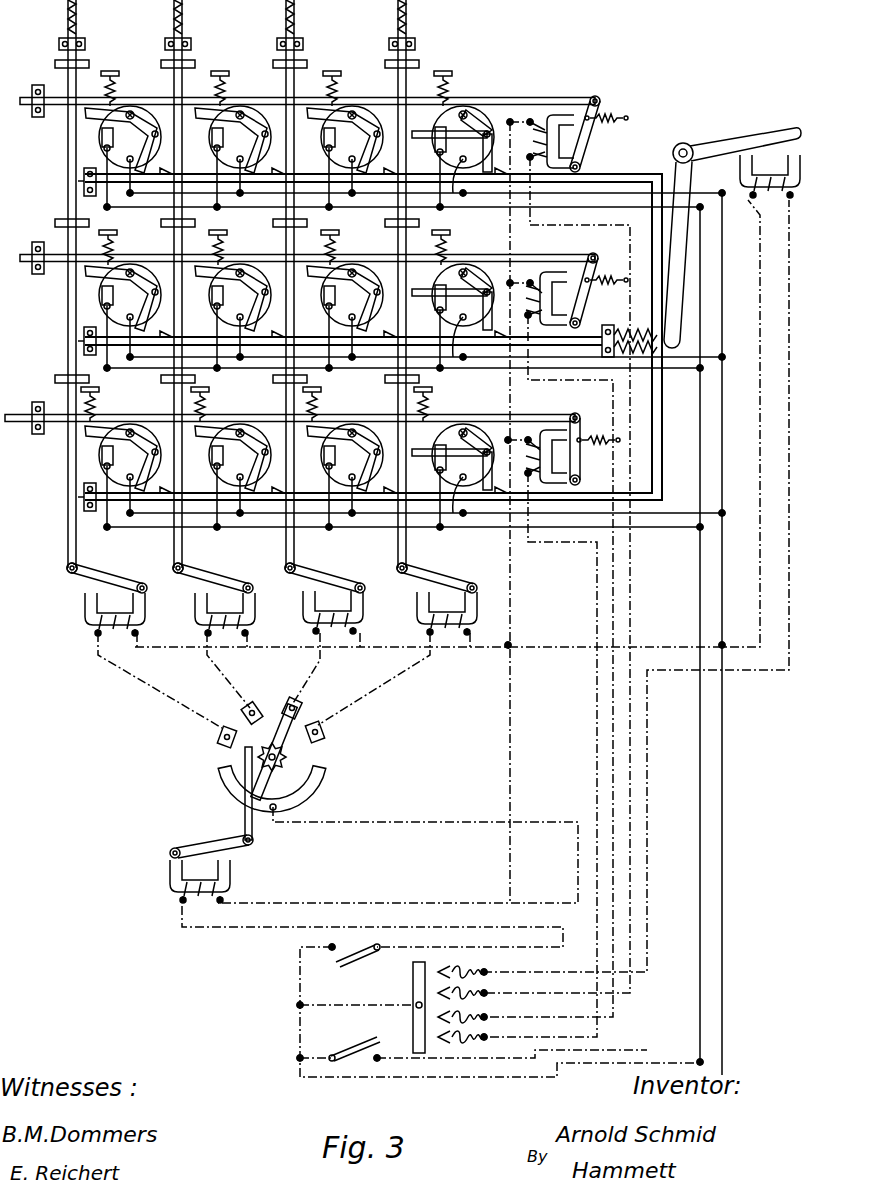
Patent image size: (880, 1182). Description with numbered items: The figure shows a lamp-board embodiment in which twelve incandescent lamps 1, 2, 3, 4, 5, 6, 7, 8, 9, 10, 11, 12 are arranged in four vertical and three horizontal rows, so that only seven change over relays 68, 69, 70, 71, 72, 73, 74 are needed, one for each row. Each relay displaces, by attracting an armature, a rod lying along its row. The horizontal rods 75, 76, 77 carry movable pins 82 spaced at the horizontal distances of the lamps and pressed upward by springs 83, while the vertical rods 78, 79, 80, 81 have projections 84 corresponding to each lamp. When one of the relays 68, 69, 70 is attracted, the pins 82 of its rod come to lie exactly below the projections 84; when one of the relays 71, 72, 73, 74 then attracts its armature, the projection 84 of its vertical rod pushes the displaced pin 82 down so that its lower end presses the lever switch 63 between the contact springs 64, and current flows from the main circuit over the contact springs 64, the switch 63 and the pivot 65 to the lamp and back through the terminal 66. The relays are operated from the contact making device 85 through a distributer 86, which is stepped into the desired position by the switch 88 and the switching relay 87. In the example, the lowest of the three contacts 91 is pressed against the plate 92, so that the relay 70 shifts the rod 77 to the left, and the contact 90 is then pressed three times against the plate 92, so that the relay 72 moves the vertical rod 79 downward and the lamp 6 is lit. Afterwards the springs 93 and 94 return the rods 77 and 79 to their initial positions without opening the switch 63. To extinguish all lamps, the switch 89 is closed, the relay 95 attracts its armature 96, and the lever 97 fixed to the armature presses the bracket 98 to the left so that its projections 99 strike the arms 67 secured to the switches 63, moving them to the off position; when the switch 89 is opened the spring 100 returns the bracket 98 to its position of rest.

The lamp 1 is at (463, 116).
The lamp 2 is at (463, 273).
The lamp 3 is at (468, 433).
The lamp 4 is at (356, 116).
The lamp 5 is at (356, 273).
The lamp 6 is at (350, 433).
The lamp 7 is at (244, 116).
The lamp 8 is at (244, 273).
The lamp 9 is at (240, 433).
The lamp 10 is at (130, 115).
The lamp 11 is at (134, 273).
The lamp 12 is at (130, 433).
The lever switch 63 is at (448, 284).
The contact springs 64 is at (436, 148).
The pivot 65 is at (508, 122).
The terminal 66 is at (463, 195).
The arms 67 is at (487, 175).
The relay 68 is at (554, 141).
The relay 69 is at (546, 298).
The relay 70 is at (570, 460).
The relay 71 is at (437, 599).
The relay 72 is at (352, 608).
The relay 73 is at (214, 599).
The relay 74 is at (107, 599).
The horizontal rod 75 is at (530, 97).
The horizontal rod 76 is at (245, 254).
The horizontal rod 77 is at (532, 407).
The vertical rod 78 is at (406, 548).
The vertical rod 79 is at (286, 553).
The vertical rod 80 is at (174, 546).
The vertical rod 81 is at (68, 543).
The movable pins 82 is at (445, 70).
The springs 83 is at (450, 86).
The projections 84 is at (395, 66).
The contact making device 85 is at (403, 1007).
The distributer 86 is at (285, 782).
The switching relay 87 is at (170, 870).
The switch 88 is at (358, 965).
The switch 89 is at (354, 1047).
The contact 90 is at (450, 968).
The contacts 91 is at (470, 1032).
The plate 92 is at (412, 1022).
The spring 93 is at (603, 113).
The spring 94 is at (168, 14).
The relay 95 is at (770, 172).
The armature 96 is at (735, 138).
The lever 97 is at (682, 315).
The bracket 98 is at (618, 175).
The projections 99 is at (165, 175).
The spring 100 is at (620, 328).